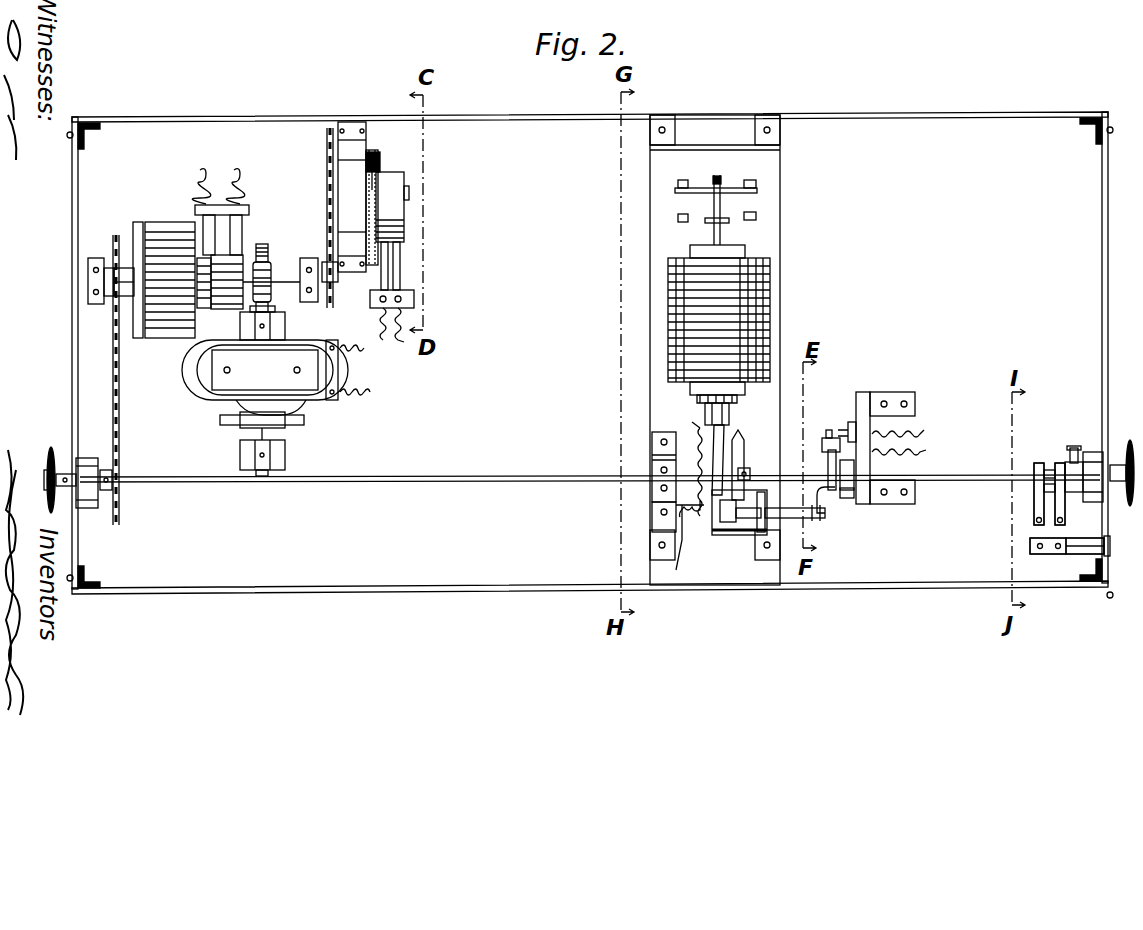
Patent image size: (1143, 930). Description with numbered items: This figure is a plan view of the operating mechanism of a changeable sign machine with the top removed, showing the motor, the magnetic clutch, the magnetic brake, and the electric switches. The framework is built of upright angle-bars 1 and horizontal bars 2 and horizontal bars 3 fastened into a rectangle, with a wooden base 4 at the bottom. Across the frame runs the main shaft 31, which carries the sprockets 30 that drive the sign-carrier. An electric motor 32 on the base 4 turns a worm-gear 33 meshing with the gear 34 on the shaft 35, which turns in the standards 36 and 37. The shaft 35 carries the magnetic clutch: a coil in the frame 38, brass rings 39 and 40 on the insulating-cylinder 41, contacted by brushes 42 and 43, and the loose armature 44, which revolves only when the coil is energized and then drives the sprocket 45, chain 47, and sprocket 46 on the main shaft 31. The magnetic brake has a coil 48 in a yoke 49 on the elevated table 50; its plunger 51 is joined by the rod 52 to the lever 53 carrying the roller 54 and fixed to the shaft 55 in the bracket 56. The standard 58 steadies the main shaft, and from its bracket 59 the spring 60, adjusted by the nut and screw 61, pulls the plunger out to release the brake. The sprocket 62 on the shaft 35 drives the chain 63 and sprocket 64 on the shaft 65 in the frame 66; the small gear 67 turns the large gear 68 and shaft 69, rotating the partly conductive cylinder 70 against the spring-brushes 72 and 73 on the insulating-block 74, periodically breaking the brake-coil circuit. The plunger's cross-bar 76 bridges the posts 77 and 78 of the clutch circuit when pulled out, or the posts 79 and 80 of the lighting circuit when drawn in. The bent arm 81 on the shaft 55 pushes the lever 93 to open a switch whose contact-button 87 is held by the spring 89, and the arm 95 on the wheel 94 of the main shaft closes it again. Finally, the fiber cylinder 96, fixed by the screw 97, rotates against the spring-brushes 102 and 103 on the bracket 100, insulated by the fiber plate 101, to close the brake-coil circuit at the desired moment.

The upright angle-bar 1 is at (82, 132).
The horizontal bar 2 is at (532, 122).
The horizontal bar 3 is at (75, 345).
The wooden platform or base 4 is at (545, 327).
The sprocket 30 is at (47, 468).
The main shaft 31 is at (532, 478).
The electric motor 32 is at (276, 408).
The worm-gear 33 is at (266, 280).
The gear 34 is at (266, 258).
The shaft 35 is at (88, 280).
The standard 36 is at (88, 292).
The standard 37 is at (318, 292).
The magnet-coil frame 38 is at (164, 280).
The brass ring 39 is at (206, 262).
The brass ring 40 is at (238, 268).
The insulating-cylinder 41 is at (222, 262).
The brush 42 is at (206, 225).
The brush 43 is at (238, 228).
The iron disk or armature 44 is at (128, 270).
The sprocket 45 is at (118, 270).
The sprocket 46 is at (114, 478).
The chain 47 is at (120, 392).
The magnet-coil 48 is at (765, 310).
The yoke or frame 49 is at (700, 388).
The table or base 50 is at (770, 241).
The plunger 51 is at (730, 414).
The rod 52 is at (718, 462).
The lever 53 is at (726, 535).
The roller 54 is at (740, 537).
The shaft 55 is at (794, 520).
The bracket 56 is at (762, 535).
The standard or support 58 is at (652, 490).
The bracket 59 is at (677, 546).
The spiral spring 60 is at (652, 456).
The threaded nut and screw 61 is at (698, 520).
The sprocket 62 is at (336, 270).
The chain 63 is at (327, 215).
The sprocket 64 is at (327, 158).
The shaft 65 is at (352, 160).
The frame 66 is at (355, 182).
The small gear 67 is at (380, 160).
The large gear 68 is at (380, 186).
The shaft 69 is at (350, 200).
The cylinder 70 is at (406, 192).
The spring-brush 72 is at (388, 234).
The spring-brush 73 is at (415, 256).
The insulating-block 74 is at (414, 296).
The cross-bar 76 is at (732, 186).
The post 77 is at (677, 218).
The post 78 is at (757, 215).
The post 79 is at (677, 183).
The post 80 is at (757, 184).
The bent arm 81 is at (826, 515).
The contact-button 87 is at (862, 432).
The spiral spring 89 is at (850, 428).
The lever 93 is at (828, 468).
The wheel 94 is at (850, 496).
The projecting bent arm 95 is at (832, 438).
The fiber cylinder 96 is at (1050, 466).
The screw 97 is at (1074, 448).
The bracket 100 is at (1085, 550).
The fiber plate 101 is at (1048, 552).
The spring-brush 102 is at (1042, 508).
The spring-brush 103 is at (1060, 506).